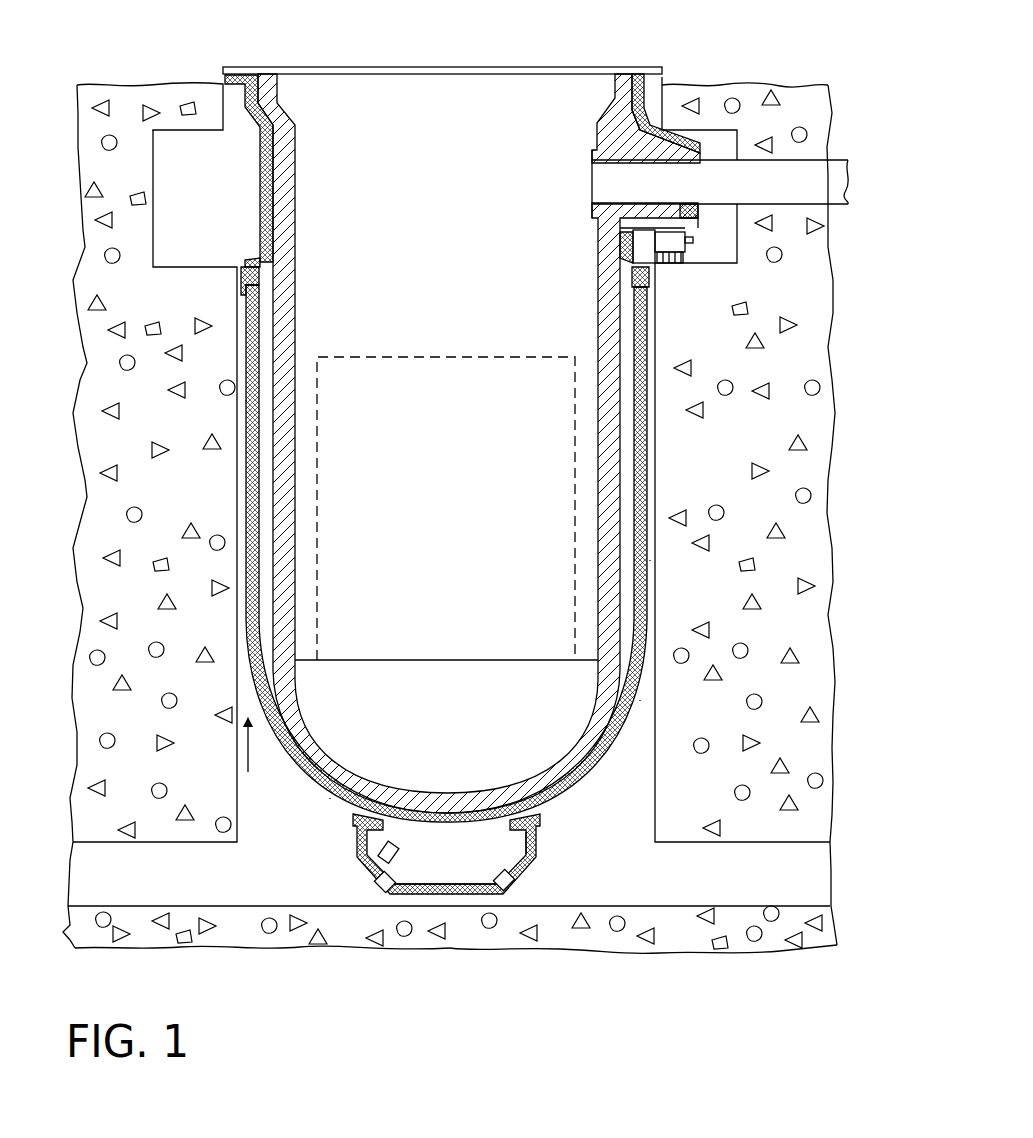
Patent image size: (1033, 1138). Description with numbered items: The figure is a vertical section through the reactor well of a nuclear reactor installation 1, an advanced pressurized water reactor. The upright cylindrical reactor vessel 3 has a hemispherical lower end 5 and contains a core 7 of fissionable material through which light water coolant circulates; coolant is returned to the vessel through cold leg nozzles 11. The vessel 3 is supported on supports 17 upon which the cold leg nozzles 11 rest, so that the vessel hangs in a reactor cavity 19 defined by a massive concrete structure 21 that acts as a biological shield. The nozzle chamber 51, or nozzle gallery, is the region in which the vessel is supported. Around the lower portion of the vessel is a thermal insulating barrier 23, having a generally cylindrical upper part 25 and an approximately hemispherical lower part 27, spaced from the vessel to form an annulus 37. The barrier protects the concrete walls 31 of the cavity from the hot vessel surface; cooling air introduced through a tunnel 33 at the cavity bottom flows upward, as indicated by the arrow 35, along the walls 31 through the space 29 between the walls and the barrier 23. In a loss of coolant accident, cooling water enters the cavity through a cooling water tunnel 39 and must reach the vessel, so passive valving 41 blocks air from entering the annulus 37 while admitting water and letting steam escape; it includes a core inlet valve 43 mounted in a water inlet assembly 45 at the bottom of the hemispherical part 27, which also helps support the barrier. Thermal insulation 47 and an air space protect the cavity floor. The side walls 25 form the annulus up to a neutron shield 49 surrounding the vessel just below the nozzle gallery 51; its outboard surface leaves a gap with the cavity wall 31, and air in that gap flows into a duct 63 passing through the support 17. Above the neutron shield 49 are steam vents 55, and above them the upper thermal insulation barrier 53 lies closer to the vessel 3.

The nuclear reactor installation 1 is at (447, 49).
The reactor vessel 3 is at (447, 182).
The hemispherical lower end 5 is at (525, 748).
The core 7 is at (458, 660).
The cold leg nozzles 11 is at (677, 152).
The supports 17 is at (697, 254).
The reactor cavity 19 is at (282, 818).
The concrete structure 21 is at (803, 612).
The thermal insulating barrier 23 is at (636, 750).
The cylindrical upper part 25 is at (648, 480).
The hemispherical lower part 27 is at (328, 800).
The space 29 is at (240, 493).
The concrete walls 31 is at (652, 565).
The tunnel 33 is at (168, 877).
The arrow 35 is at (248, 748).
The annulus 37 is at (632, 684).
The cooling water tunnel 39 is at (722, 880).
The passive valving 41 is at (347, 863).
The core inlet valve 43 is at (352, 882).
The water inlet assembly 45 is at (540, 838).
The thermal insulation 47 is at (462, 895).
The neutron shield 49 is at (250, 276).
The nozzle chamber 51 is at (221, 167).
The thermal insulation barrier 53 is at (262, 222).
The steam vents 55 is at (258, 262).
The duct 63 is at (668, 263).